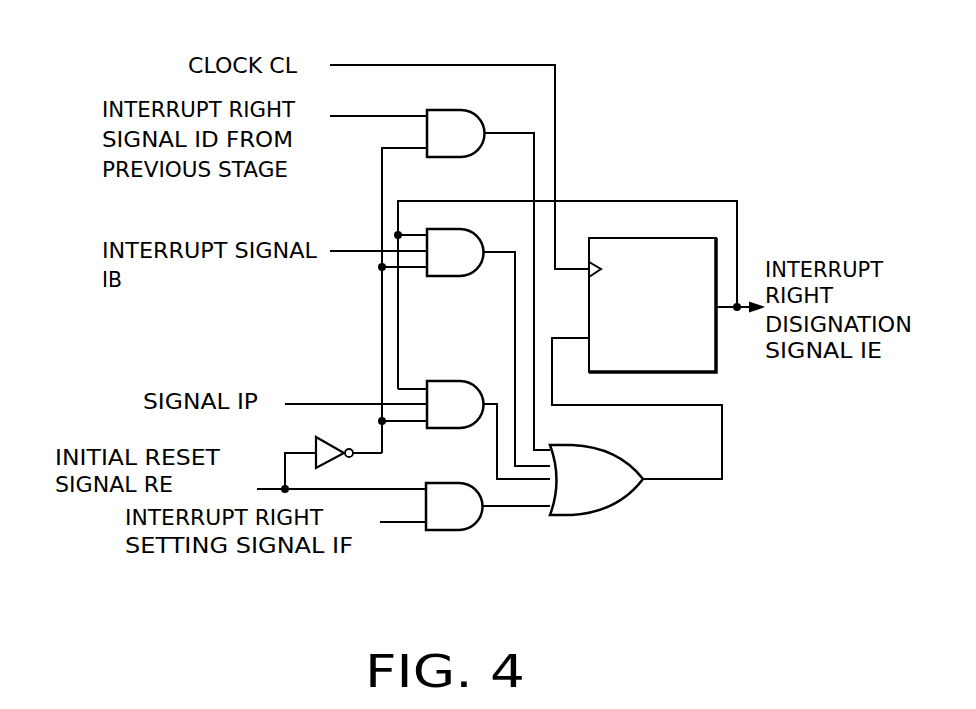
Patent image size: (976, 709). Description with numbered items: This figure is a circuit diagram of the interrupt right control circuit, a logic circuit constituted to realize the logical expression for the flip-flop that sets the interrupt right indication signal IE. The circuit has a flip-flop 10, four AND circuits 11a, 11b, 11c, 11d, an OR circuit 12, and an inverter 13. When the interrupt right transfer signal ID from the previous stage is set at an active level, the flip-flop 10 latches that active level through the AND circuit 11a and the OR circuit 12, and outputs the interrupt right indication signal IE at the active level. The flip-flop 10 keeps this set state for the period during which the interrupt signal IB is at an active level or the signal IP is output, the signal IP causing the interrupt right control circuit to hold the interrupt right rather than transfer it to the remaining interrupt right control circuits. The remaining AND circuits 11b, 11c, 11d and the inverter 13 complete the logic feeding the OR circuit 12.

The flip-flop 10 is at (716, 365).
The AND circuit 11a is at (469, 110).
The AND circuit 11b is at (476, 238).
The AND circuit 11c is at (477, 385).
The AND circuit 11d is at (460, 531).
The OR circuit 12 is at (632, 500).
The inverter 13 is at (328, 445).